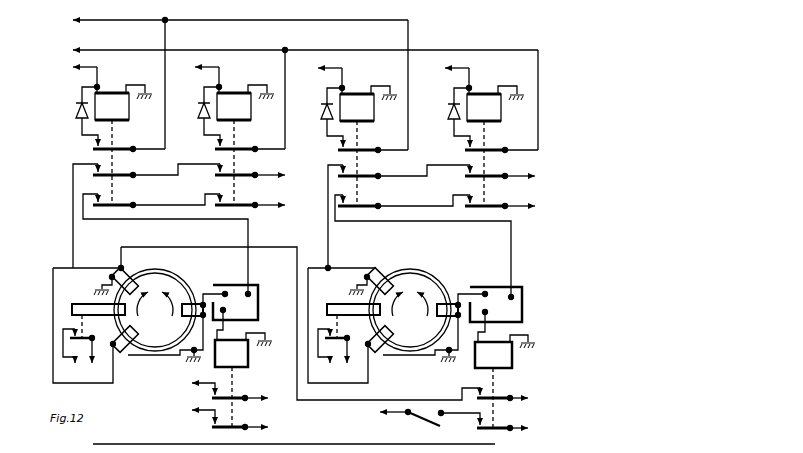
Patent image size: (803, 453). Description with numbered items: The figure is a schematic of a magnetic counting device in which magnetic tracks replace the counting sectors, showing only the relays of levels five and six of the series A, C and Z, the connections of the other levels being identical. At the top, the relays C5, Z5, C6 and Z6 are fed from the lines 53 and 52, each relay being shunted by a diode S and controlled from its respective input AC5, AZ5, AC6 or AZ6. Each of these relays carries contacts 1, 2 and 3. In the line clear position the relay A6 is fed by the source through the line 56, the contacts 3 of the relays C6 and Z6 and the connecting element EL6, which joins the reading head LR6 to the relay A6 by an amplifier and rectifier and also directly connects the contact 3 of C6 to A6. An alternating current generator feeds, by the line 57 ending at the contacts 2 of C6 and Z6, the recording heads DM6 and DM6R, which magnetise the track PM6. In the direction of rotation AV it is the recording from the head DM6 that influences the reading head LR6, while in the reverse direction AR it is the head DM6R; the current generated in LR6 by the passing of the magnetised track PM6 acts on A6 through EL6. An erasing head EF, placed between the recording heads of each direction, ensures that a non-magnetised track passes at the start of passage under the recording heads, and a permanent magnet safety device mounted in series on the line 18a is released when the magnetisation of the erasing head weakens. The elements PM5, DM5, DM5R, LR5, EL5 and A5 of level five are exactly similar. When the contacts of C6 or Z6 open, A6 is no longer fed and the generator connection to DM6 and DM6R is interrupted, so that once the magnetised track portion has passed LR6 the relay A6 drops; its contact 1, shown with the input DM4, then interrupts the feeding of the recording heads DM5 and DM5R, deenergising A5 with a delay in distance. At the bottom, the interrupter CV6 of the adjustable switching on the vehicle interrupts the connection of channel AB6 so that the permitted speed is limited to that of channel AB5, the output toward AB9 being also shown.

The line 53 is at (231, 82).
The line 52 is at (296, 97).
The control input AC5 is at (77, 76).
The control input AZ5 is at (198, 75).
The control input AC6 is at (318, 72).
The control input AZ6 is at (446, 72).
The relay C5 is at (124, 136).
The relay Z5 is at (246, 136).
The relay C6 is at (369, 137).
The relay Z6 is at (496, 137).
The diode S is at (269, 113).
The contact 1 is at (315, 268).
The contact 2 is at (290, 216).
The contact 3 is at (298, 311).
The line 57 is at (394, 284).
The line 56 is at (398, 202).
The magnetic track PM5 is at (158, 270).
The magnetic track PM6 is at (413, 270).
The recording head DM5 is at (111, 277).
The recording head DM6 is at (366, 277).
The reverse recording head DM5R is at (113, 344).
The reverse recording head DM6R is at (368, 344).
The erasing head EF is at (95, 304).
The reading head LR5 is at (204, 296).
The reading head LR6 is at (459, 296).
The connecting element EL5 is at (235, 312).
The connecting element EL6 is at (496, 314).
The relay A5 is at (243, 381).
The relay A6 is at (505, 382).
The forward direction of rotation AV is at (272, 311).
The reverse direction of rotation AR is at (295, 311).
The line 18a is at (207, 349).
The recording head DM4 is at (188, 384).
The channel 5 of AB AB5 is at (188, 411).
The channel 6 of AB AB6 is at (383, 413).
The channel 9 of AB AB9 is at (391, 433).
The interrupter CV6 is at (432, 422).